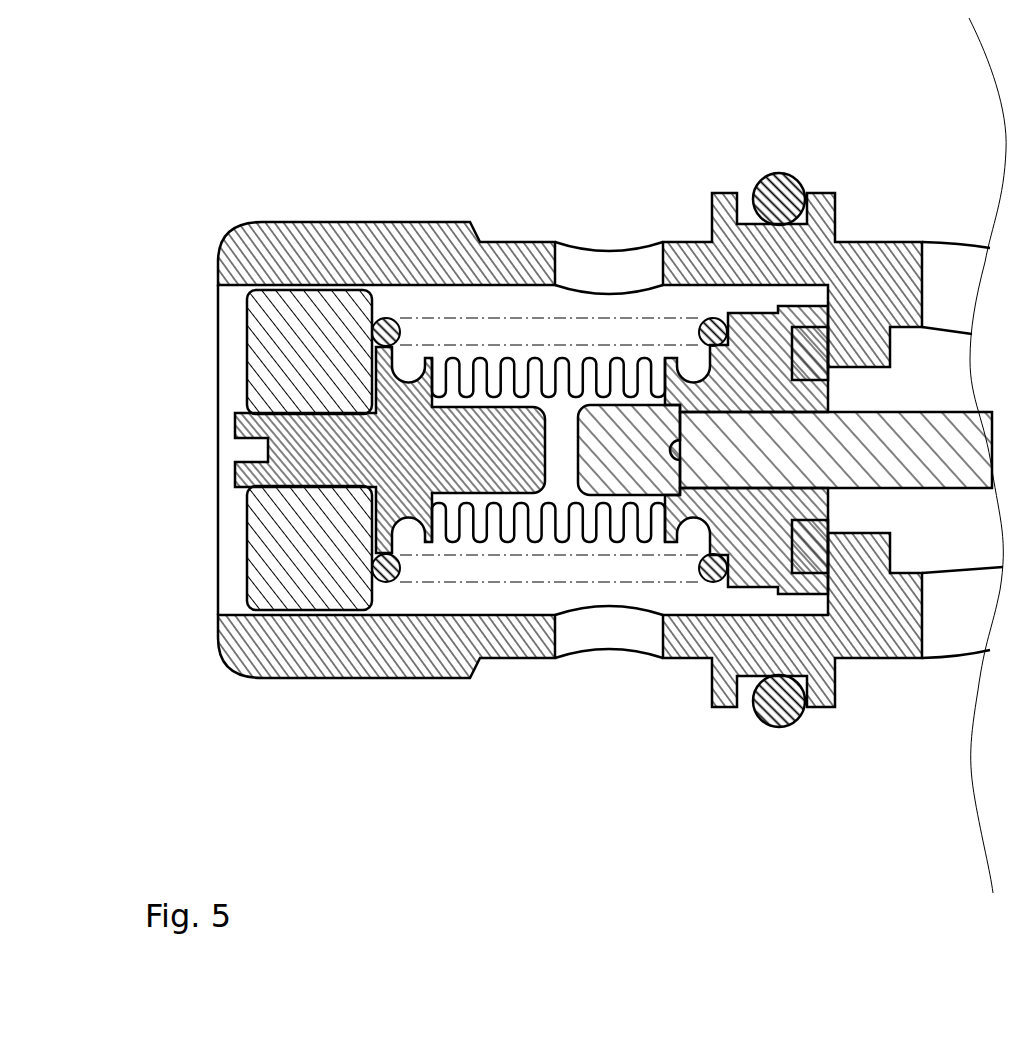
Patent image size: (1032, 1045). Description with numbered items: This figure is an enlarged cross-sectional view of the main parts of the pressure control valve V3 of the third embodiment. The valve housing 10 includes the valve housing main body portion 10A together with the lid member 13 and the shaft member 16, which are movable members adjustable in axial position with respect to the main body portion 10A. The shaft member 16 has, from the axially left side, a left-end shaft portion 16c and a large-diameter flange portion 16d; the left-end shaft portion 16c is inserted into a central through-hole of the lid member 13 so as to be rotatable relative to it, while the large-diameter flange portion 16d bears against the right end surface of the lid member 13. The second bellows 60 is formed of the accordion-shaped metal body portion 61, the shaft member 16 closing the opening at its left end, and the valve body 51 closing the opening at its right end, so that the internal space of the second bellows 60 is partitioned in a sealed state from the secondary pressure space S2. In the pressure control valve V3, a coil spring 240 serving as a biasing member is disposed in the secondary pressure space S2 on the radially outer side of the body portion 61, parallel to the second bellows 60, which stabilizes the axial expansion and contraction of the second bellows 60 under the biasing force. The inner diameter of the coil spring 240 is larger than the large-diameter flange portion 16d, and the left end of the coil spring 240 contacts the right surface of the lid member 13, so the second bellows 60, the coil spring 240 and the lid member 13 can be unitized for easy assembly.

The valve housing 10 is at (450, 692).
The valve housing main body portion 10A is at (245, 633).
The lid member 13 is at (300, 322).
The shaft member 16 is at (322, 581).
The left-end shaft portion 16c is at (310, 457).
The large-diameter flange portion 16d is at (385, 562).
The coil spring 240 is at (383, 318).
The valve body 51 is at (752, 606).
The second bellows 60 is at (556, 330).
The body portion 61 is at (532, 357).
The secondary pressure space S2 is at (593, 600).
The pressure control valve V3 is at (766, 125).